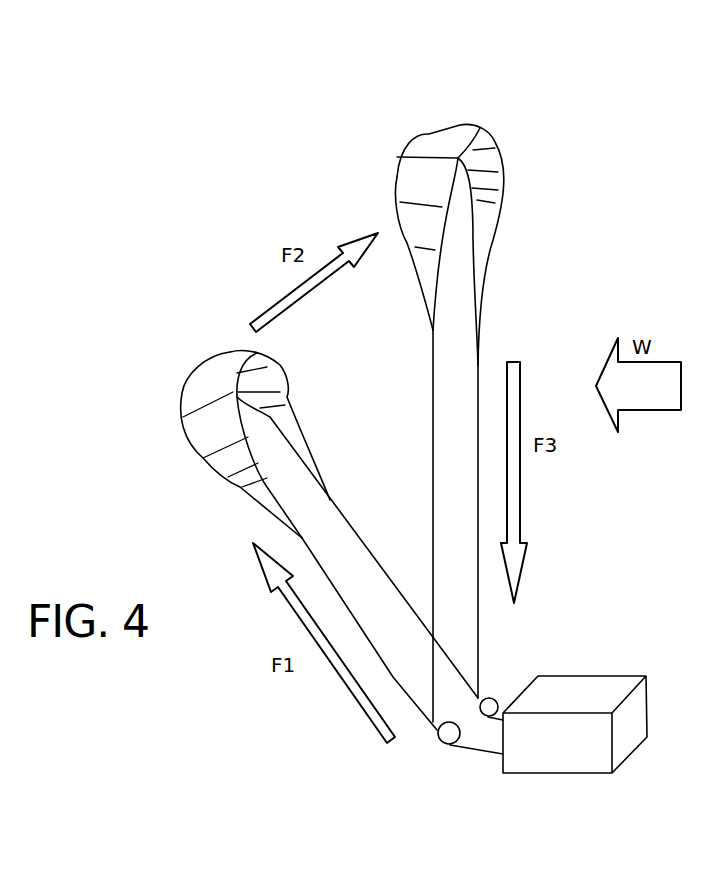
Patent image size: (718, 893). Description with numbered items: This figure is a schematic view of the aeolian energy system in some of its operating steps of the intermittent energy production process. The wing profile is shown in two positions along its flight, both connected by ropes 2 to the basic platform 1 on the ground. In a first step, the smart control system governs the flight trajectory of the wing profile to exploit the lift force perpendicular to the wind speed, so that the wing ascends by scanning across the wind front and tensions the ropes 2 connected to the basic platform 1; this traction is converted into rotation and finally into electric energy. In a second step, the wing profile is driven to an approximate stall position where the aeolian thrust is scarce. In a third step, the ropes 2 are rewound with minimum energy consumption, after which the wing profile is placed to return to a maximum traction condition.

The basic platform 1 is at (575, 687).
The ropes 2 is at (477, 362).